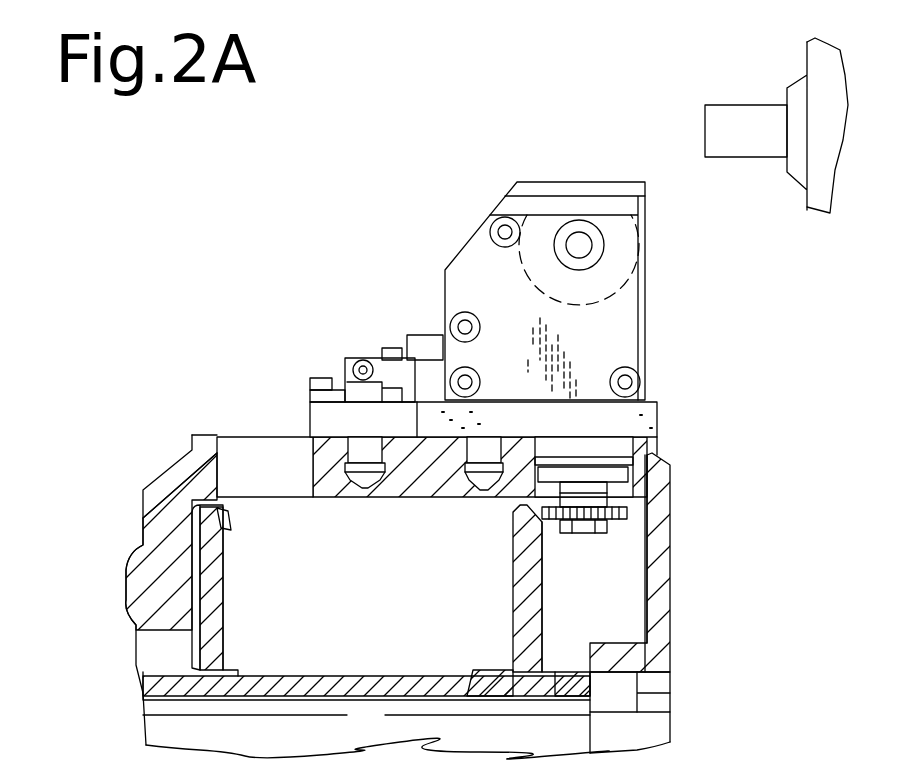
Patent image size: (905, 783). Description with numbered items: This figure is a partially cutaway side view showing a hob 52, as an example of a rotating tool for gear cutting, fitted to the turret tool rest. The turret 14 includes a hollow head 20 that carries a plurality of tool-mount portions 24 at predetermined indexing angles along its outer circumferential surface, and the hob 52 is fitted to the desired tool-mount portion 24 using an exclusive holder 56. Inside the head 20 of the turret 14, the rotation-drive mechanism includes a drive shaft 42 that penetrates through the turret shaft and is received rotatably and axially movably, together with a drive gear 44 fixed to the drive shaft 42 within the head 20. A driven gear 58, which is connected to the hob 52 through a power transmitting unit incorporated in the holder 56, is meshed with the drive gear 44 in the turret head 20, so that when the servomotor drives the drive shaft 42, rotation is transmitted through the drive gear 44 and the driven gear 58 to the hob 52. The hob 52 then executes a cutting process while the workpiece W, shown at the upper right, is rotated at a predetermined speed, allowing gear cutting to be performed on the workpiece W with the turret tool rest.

The workpiece W is at (708, 123).
The turret 14 is at (672, 622).
The head 20 is at (237, 435).
The tool-mount portion 24 is at (421, 440).
The drive shaft 42 is at (310, 712).
The drive gear 44 is at (520, 565).
The hob 52 is at (560, 197).
The holder 56 is at (473, 283).
The driven gear 58 is at (632, 512).